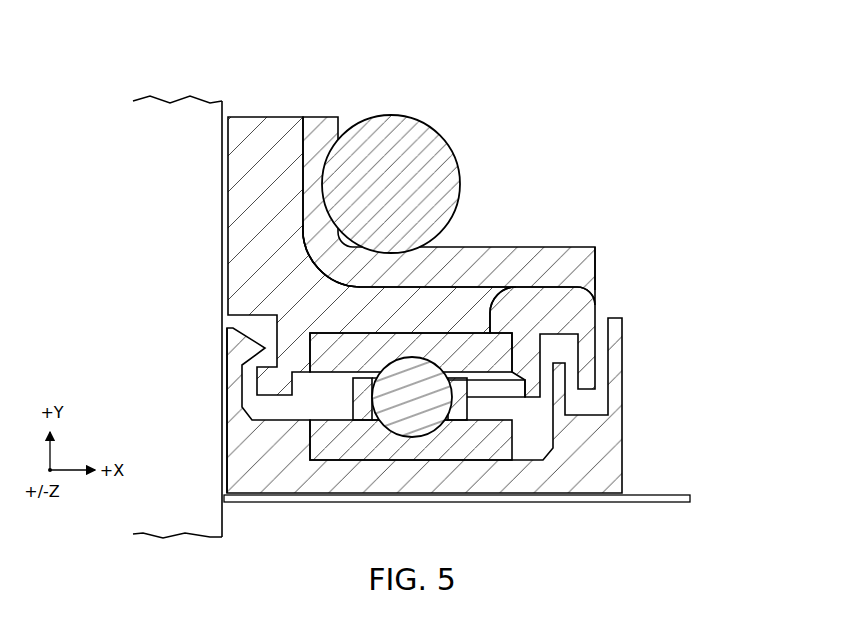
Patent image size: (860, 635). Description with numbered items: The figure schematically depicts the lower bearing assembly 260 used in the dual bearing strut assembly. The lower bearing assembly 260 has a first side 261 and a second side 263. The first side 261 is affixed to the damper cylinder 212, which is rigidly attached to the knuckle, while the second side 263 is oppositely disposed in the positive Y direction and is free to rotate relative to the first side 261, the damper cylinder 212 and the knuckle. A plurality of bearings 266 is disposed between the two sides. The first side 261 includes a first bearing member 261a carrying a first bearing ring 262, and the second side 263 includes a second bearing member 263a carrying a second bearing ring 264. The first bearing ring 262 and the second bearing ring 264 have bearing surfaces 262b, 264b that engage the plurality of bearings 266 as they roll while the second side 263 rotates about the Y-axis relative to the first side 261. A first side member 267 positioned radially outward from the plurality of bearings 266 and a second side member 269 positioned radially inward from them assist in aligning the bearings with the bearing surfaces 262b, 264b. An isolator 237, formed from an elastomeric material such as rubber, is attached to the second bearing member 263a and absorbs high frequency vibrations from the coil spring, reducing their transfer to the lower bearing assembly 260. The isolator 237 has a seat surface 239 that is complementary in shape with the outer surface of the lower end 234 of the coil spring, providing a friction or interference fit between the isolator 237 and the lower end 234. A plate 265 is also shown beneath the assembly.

The damper cylinder 212 is at (170, 333).
The lower end of the coil spring 234 is at (460, 183).
The isolator 237 is at (574, 247).
The seat surface 239 is at (320, 258).
The lower bearing assembly 260 is at (628, 184).
The first side 261 is at (652, 442).
The first bearing member 261a is at (230, 452).
The first bearing ring 262 is at (498, 443).
The bearing surface 262b is at (414, 422).
The second side 263 is at (338, 100).
The second bearing member 263a is at (270, 116).
The second bearing ring 264 is at (518, 290).
The bearing surface 264b is at (410, 355).
The plate 265 is at (692, 503).
The plurality of bearings 266 is at (434, 458).
The first side member 267 is at (467, 400).
The second side member 269 is at (352, 418).